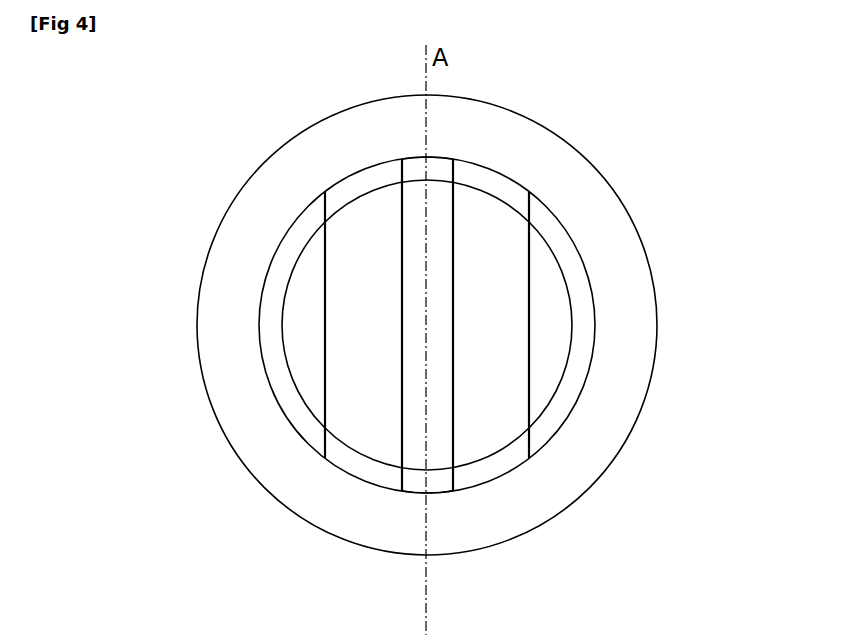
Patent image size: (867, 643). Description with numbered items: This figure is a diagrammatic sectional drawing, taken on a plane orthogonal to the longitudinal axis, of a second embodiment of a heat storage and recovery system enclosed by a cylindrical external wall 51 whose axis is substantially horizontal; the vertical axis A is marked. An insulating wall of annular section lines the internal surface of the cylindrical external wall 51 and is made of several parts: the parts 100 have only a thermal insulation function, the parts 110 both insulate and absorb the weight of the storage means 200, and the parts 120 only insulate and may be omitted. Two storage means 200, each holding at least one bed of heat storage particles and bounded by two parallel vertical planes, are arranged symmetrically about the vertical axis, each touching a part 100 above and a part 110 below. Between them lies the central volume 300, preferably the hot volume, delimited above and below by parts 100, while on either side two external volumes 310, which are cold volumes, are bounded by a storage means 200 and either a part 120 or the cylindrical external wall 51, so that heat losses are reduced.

The cylindrical external wall 51 is at (577, 203).
The insulating wall part 100 is at (347, 198).
The insulating wall part 110 is at (481, 487).
The insulating wall part 120 is at (585, 331).
The storage means 200 is at (484, 292).
The central volume 300 is at (424, 413).
The external volume 310 is at (548, 362).